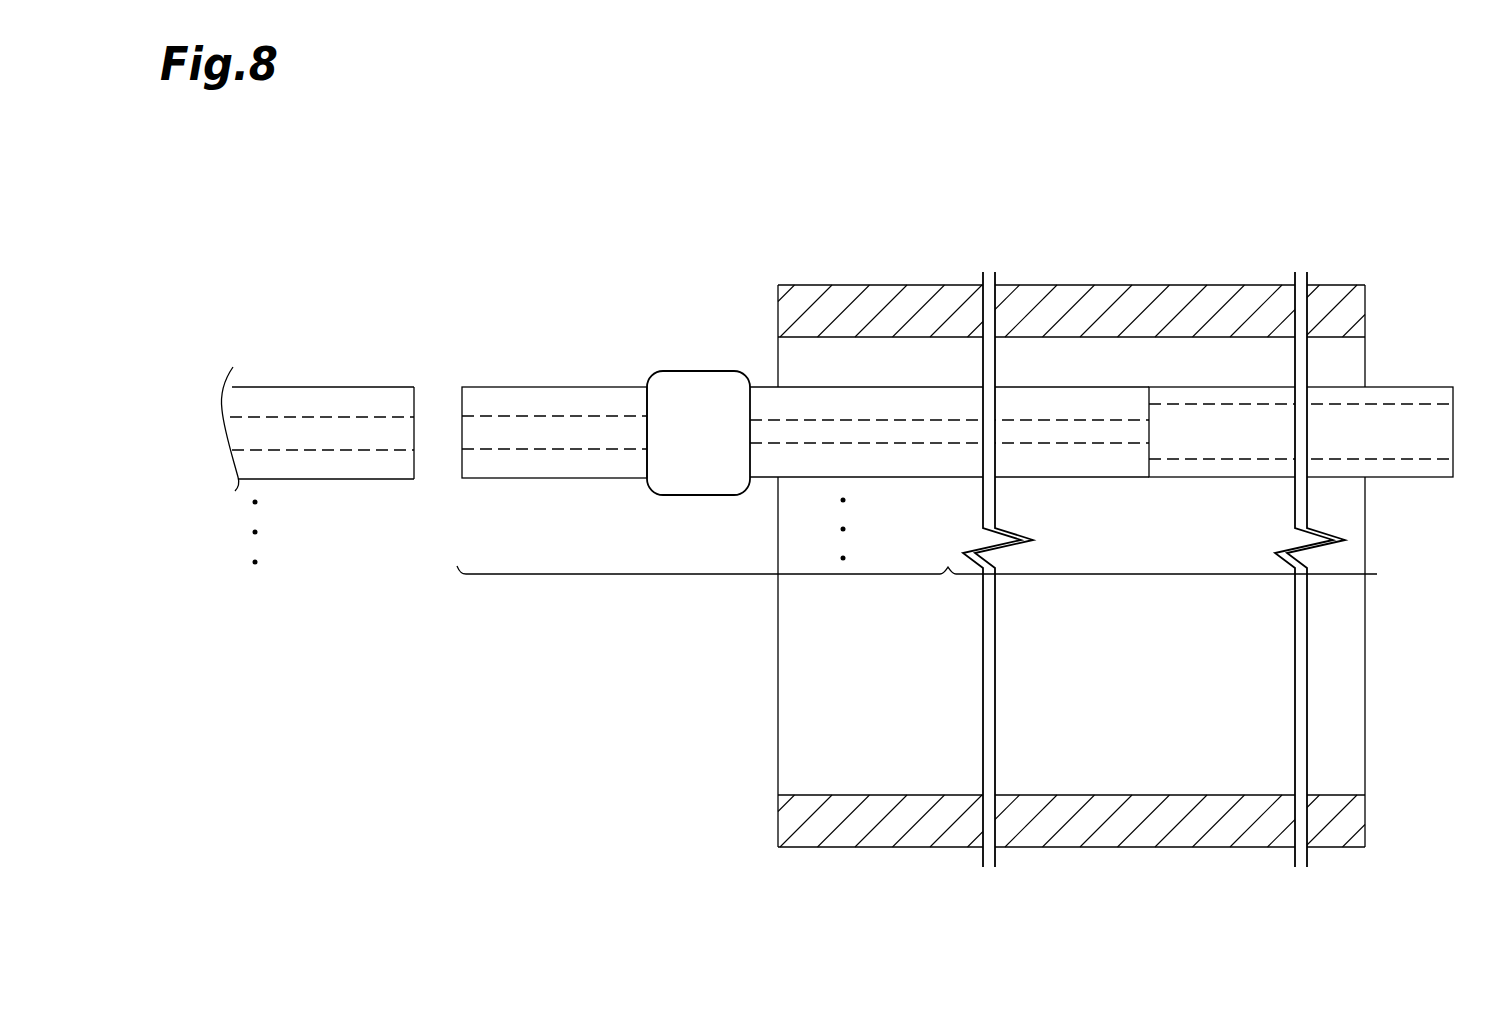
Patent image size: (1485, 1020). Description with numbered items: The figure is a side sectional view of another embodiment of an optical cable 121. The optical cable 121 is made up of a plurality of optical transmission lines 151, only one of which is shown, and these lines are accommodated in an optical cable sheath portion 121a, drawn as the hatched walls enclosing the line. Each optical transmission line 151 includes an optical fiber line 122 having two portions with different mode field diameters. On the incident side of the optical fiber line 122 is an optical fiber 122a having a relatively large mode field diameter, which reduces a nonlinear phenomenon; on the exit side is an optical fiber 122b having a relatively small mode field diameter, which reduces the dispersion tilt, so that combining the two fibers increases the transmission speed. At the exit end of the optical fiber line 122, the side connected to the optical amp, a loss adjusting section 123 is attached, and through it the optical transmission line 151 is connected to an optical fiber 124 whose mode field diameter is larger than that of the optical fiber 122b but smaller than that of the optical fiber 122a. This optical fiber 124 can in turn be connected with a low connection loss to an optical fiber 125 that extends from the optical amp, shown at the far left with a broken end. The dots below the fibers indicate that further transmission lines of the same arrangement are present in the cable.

The optical cable 121 is at (1047, 230).
The optical cable sheath portion 121a is at (1142, 302).
The optical fiber line 122 is at (1306, 415).
The optical fiber 122a is at (1394, 466).
The optical fiber 122b is at (926, 460).
The loss adjusting section 123 is at (697, 395).
The optical fiber 124 is at (522, 400).
The optical fiber 125 is at (302, 398).
The optical transmission line 151 is at (917, 593).